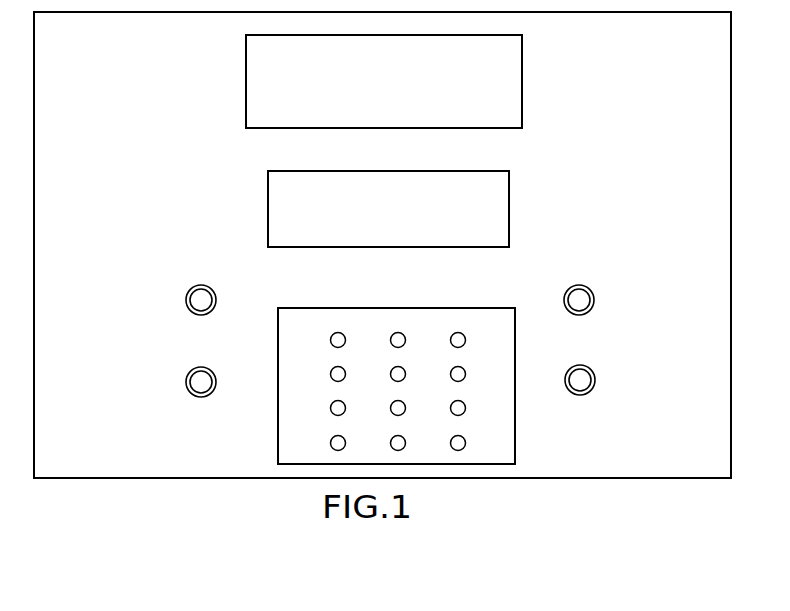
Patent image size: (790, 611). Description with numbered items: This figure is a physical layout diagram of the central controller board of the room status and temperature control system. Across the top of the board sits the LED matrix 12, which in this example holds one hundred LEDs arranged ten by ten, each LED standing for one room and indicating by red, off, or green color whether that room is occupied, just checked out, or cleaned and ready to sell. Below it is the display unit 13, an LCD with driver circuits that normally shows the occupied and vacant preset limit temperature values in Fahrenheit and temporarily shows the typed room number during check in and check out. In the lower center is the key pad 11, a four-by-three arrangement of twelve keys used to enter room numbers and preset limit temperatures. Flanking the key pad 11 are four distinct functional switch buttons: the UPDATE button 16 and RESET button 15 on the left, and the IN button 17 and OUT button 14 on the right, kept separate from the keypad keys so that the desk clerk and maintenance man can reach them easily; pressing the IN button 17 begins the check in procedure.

The key pad 11 is at (516, 416).
The LED matrix 12 is at (523, 47).
The display unit 13 is at (510, 184).
The OUT switch button 14 is at (592, 368).
The RESET switch button 15 is at (186, 372).
The UPDATE switch button 16 is at (186, 291).
The IN switch button 17 is at (590, 287).